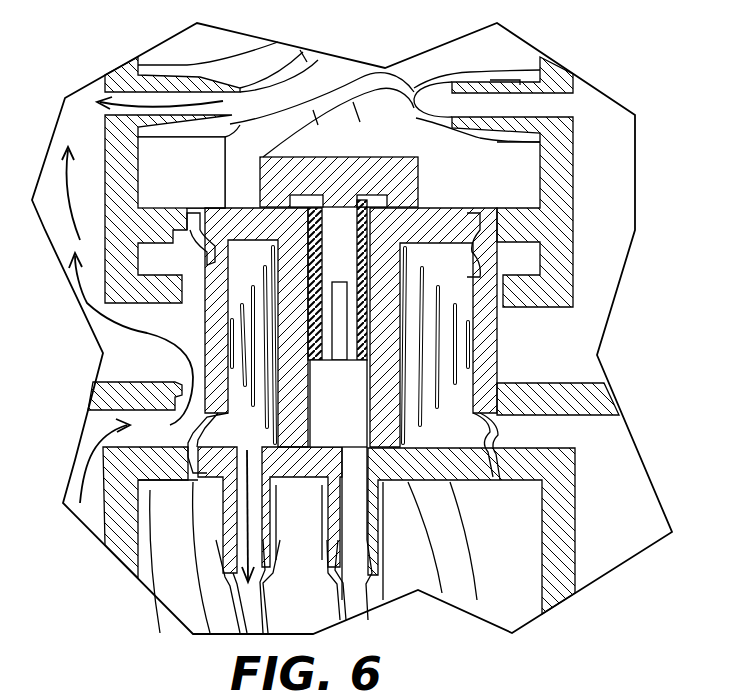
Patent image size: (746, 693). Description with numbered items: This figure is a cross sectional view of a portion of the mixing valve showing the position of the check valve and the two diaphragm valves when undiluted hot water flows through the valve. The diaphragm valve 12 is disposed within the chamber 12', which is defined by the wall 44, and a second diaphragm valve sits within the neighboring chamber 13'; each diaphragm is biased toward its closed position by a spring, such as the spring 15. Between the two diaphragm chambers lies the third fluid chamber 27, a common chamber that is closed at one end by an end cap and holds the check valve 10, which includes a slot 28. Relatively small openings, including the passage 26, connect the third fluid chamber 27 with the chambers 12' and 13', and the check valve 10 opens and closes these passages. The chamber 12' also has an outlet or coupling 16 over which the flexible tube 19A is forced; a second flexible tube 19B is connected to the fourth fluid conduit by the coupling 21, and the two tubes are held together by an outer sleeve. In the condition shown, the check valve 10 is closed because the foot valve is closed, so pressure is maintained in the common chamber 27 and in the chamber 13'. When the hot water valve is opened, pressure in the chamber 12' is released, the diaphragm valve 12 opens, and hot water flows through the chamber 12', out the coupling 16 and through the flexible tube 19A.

The check valve 10 is at (383, 201).
The diaphragm valve 12 is at (184, 211).
The chamber 12' is at (140, 403).
The chamber 13' is at (535, 446).
The spring 15 is at (237, 208).
The outlet or coupling 16 is at (255, 553).
The flexible tube 19A is at (250, 623).
The flexible tube 19B is at (330, 70).
The coupling 21 is at (190, 98).
The opening or passage 26 is at (292, 310).
The third fluid chamber 27 is at (342, 433).
The slot 28 is at (338, 315).
The wall 44 is at (250, 198).